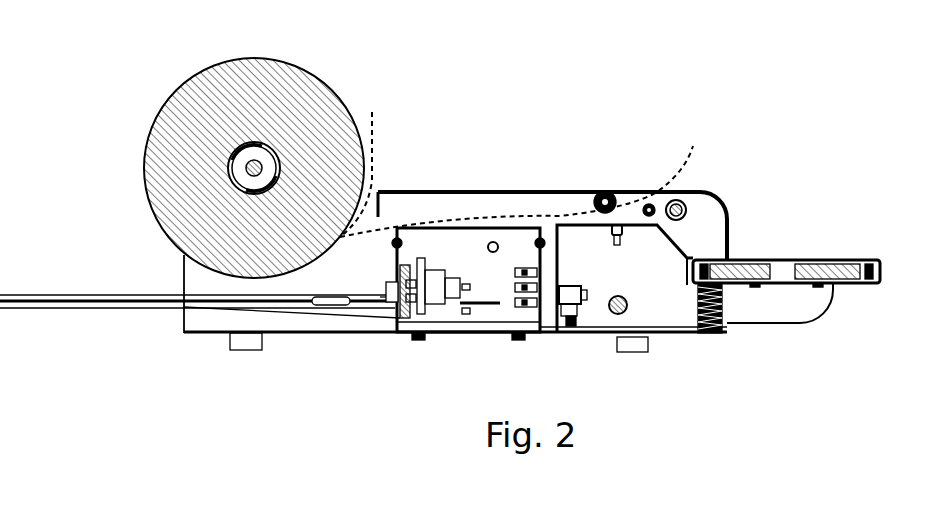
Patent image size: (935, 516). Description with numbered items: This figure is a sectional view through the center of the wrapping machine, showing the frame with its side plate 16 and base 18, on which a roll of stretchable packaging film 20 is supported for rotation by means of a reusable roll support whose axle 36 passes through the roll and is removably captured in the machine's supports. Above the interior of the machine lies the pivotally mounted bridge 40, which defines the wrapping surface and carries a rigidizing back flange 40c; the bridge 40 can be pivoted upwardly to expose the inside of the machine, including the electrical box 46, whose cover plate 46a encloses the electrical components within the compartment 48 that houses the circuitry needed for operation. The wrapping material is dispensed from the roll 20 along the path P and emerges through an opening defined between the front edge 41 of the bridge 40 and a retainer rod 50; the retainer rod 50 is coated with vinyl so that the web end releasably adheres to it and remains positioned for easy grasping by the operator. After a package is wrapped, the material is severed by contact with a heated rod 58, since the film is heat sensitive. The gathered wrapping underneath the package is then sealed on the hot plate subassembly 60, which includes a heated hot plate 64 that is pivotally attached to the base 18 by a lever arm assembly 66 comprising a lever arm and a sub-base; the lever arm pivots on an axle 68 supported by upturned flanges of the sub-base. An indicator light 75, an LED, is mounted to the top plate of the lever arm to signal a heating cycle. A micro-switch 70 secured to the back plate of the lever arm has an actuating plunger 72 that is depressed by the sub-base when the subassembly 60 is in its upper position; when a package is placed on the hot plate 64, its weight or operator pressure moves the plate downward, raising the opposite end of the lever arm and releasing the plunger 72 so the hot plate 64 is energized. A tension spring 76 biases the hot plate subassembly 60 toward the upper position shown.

The side plate 16 is at (207, 280).
The base 18 is at (340, 328).
The roll of stretchable packaging film 20 is at (292, 58).
The axle 36 is at (244, 165).
The bridge 40 is at (467, 190).
The rigidizing back flange 40c is at (378, 195).
The path P is at (516, 165).
The front edge 41 is at (605, 190).
The electrical box 46 is at (505, 325).
The cover plate 46a is at (495, 242).
The compartment 48 is at (443, 322).
The retainer rod 50 is at (660, 212).
The heated rod 58 is at (678, 200).
The hot plate subassembly 60 is at (762, 298).
The hot plate 64 is at (882, 270).
The lever arm assembly 66 is at (795, 302).
The axle 68 is at (618, 316).
The micro-switch 70 is at (568, 288).
The actuating plunger 72 is at (577, 330).
The indicator light 75 is at (618, 246).
The tension spring 76 is at (698, 300).